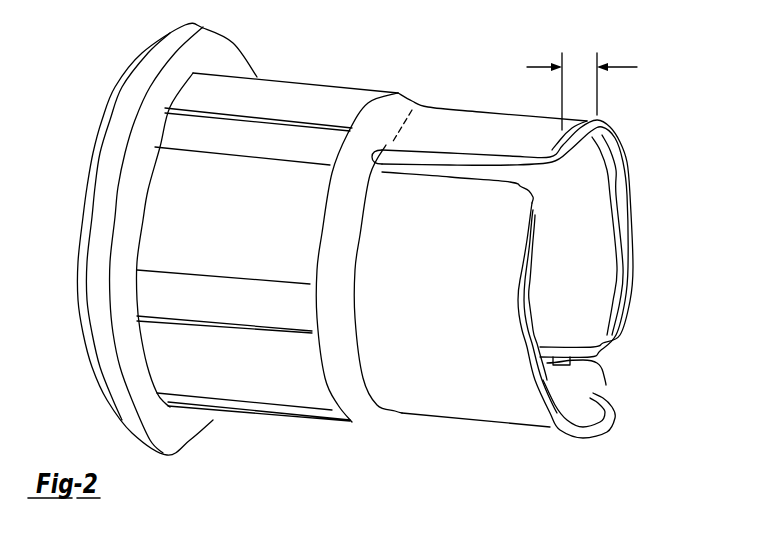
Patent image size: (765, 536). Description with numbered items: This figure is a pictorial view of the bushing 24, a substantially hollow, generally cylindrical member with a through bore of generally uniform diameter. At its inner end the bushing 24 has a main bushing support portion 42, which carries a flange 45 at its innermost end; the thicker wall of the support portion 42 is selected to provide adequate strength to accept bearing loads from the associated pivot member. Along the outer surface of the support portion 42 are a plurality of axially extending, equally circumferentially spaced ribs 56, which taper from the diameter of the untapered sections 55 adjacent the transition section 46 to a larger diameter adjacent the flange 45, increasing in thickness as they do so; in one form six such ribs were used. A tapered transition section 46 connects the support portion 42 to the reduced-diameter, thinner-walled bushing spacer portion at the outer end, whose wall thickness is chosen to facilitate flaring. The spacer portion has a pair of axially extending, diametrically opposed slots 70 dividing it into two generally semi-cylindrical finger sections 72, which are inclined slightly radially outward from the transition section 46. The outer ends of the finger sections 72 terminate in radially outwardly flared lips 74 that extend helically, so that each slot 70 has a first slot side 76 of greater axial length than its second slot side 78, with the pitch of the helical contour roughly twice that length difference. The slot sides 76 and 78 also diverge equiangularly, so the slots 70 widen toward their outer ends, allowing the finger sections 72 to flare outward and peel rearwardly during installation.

The bushing 24 is at (353, 68).
The main bushing support portion 42 is at (353, 425).
The flange 45 is at (115, 100).
The tapered transition section 46 is at (398, 103).
The untapered sections 55 is at (252, 151).
The ribs 56 is at (236, 105).
The slots 70 is at (487, 175).
The finger sections 72 is at (603, 333).
The flared lips 74 is at (620, 133).
The first slot side 76 is at (472, 153).
The second slot side 78 is at (450, 168).